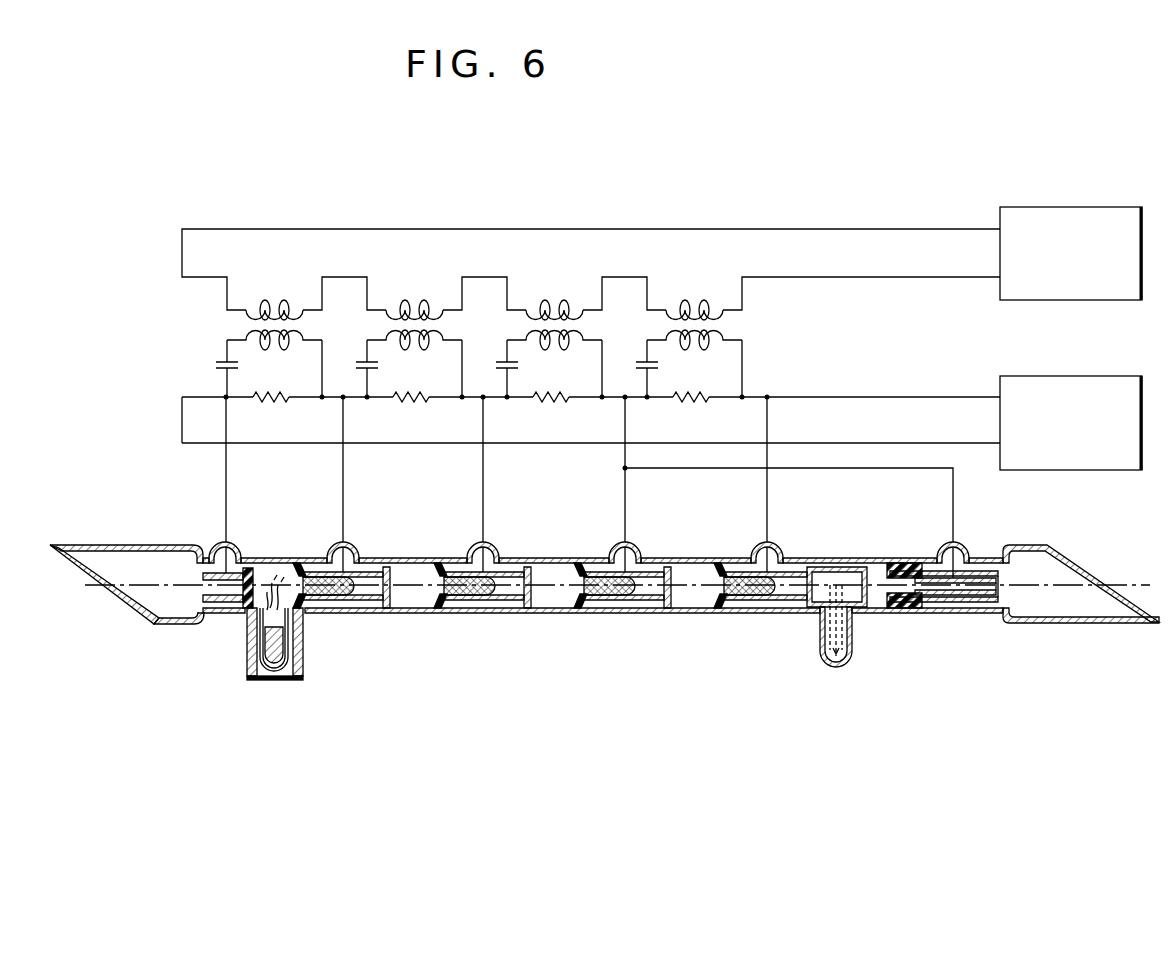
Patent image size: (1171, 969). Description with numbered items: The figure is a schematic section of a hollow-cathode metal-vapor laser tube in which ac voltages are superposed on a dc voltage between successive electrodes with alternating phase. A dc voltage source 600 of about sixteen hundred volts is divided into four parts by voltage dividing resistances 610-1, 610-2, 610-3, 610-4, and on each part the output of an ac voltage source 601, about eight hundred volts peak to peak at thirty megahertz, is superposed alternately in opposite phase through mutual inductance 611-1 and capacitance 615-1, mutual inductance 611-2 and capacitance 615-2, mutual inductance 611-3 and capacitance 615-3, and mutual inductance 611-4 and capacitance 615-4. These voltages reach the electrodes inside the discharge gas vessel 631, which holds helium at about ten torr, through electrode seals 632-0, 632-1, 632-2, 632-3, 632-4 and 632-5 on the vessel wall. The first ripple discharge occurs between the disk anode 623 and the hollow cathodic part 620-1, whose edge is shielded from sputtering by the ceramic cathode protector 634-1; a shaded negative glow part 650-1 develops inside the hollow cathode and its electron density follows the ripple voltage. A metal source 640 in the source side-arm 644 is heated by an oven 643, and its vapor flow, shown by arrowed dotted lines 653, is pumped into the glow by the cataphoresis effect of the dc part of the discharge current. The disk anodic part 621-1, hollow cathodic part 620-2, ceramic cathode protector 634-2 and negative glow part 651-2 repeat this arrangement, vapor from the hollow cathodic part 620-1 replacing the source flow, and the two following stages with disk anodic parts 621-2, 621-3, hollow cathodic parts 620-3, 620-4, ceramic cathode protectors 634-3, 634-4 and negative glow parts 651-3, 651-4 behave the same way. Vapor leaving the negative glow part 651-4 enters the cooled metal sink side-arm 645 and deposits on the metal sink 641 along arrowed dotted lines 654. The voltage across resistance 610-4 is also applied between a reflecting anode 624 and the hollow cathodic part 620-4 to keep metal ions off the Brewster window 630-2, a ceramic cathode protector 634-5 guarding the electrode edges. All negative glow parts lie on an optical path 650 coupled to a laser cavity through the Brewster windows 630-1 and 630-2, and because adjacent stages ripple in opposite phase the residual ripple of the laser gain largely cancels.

The dc voltage source 600 is at (1026, 376).
The ac voltage source 601 is at (1032, 207).
The voltage dividing resistance 610-1 is at (283, 403).
The voltage dividing resistance 610-2 is at (423, 403).
The voltage dividing resistance 610-3 is at (563, 403).
The voltage dividing resistance 610-4 is at (703, 403).
The mutual inductance 611-1 is at (302, 326).
The mutual inductance 611-2 is at (436, 326).
The mutual inductance 611-3 is at (574, 326).
The mutual inductance 611-4 is at (712, 326).
The capacitance 615-1 is at (238, 366).
The capacitance 615-2 is at (378, 366).
The capacitance 615-3 is at (518, 366).
The capacitance 615-4 is at (658, 366).
The hollow cathodic part 620-1 is at (328, 600).
The hollow cathodic part 620-2 is at (455, 600).
The hollow cathodic part 620-3 is at (603, 600).
The hollow cathodic part 620-4 is at (740, 600).
The disk anodic part 621-1 is at (388, 608).
The electrode flange 621-2 is at (533, 608).
The electrode flange 621-3 is at (668, 608).
The disk anode 623 is at (228, 597).
The reflecting anode 624 is at (975, 598).
The Brewster window 630-1 is at (130, 598).
The Brewster window 630-2 is at (1070, 570).
The discharge gas vessel 631 is at (165, 627).
The lead-in feedthrough 632-0 is at (228, 541).
The lead-in feedthrough 632-1 is at (345, 541).
The lead-in feedthrough 632-2 is at (485, 541).
The lead-in feedthrough 632-3 is at (626, 541).
The lead-in feedthrough 632-4 is at (768, 541).
The lead-in feedthrough 632-5 is at (955, 542).
The ceramic cathode protector 634-1 is at (296, 565).
The ceramic cathode protector 634-2 is at (438, 565).
The insulating spacer 634-3 is at (580, 565).
The insulating spacer 634-4 is at (717, 565).
The ceramic cathode protector 634-5 is at (897, 565).
The metal source 640 is at (283, 673).
The metal sink 641 is at (852, 664).
The oven 643 is at (303, 673).
The source side-arm 644 is at (248, 681).
The metal sink side-arm 645 is at (827, 666).
The optical path 650 is at (145, 586).
The inner electrode 650-1 is at (355, 597).
The negative glow part 651-2 is at (491, 595).
The negative glow part 651-3 is at (634, 595).
The negative glow part 651-4 is at (778, 600).
The arrowed dotted lines 653 is at (250, 650).
The arrowed dotted lines 654 is at (850, 615).